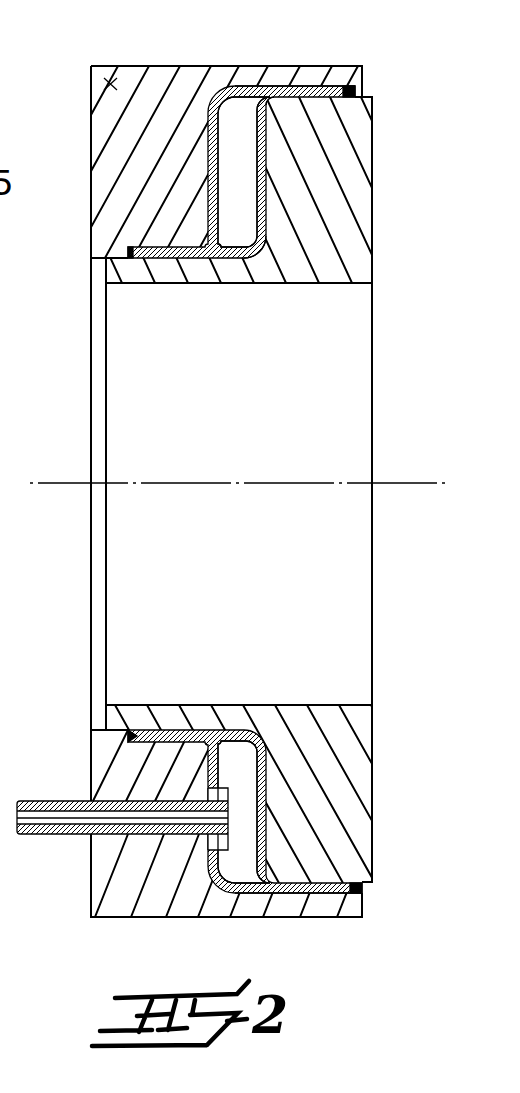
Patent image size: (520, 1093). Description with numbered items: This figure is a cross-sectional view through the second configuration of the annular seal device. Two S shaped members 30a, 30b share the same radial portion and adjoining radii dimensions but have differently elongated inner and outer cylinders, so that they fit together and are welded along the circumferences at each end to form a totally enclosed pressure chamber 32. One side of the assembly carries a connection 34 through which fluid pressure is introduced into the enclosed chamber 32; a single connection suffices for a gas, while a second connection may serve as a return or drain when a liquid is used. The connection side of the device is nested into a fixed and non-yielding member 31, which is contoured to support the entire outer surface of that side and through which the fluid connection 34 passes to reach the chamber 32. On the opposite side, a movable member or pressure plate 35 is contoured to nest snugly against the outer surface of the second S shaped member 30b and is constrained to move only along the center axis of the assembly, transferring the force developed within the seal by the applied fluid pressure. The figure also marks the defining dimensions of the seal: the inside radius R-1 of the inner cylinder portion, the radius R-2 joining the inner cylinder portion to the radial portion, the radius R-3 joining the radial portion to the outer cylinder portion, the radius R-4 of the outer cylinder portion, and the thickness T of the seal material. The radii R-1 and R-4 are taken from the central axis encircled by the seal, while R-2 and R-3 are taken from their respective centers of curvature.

The S shaped member 30a is at (178, 258).
The S shaped member 30b is at (254, 66).
The fixed and non-yielding member 31 is at (102, 66).
The pressure chamber 32 is at (250, 148).
The connection 34 is at (72, 802).
The movable member or pressure plate 35 is at (352, 190).
The inside radius of the inner cylinder portion R-1 is at (48, 483).
The radius joining the inner cylinder portion to the radial portion R-2 is at (227, 217).
The radius joining the radial portion to the outer cylinder portion R-3 is at (292, 127).
The radius of the outer cylinder portion R-4 is at (427, 483).
The thickness of the seal material T is at (223, 182).